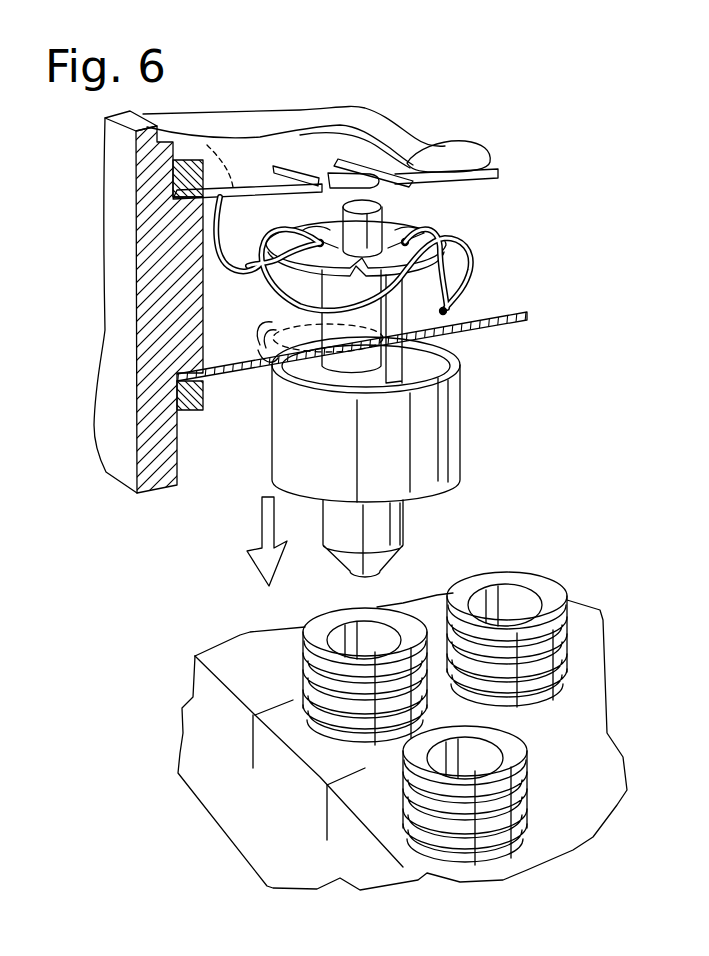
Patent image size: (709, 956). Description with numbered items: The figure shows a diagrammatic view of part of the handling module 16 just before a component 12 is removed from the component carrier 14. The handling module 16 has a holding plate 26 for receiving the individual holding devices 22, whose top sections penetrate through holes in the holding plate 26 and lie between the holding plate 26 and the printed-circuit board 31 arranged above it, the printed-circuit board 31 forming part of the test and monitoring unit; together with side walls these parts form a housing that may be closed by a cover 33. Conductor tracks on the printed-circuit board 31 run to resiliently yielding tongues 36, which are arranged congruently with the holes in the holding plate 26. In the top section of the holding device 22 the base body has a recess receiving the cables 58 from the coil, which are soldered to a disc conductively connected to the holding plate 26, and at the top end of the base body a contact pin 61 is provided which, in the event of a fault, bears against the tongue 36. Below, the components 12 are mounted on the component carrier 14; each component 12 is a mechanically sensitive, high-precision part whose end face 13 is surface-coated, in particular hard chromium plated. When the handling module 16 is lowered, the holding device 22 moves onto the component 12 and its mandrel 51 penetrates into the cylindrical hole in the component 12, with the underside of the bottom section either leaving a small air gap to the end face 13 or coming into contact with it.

The handling module 16 is at (95, 305).
The tongue 36 is at (357, 170).
The cover 33 is at (403, 133).
The printed-circuit board 31 is at (405, 165).
The contact pin 61 is at (387, 223).
The cables 58 is at (472, 247).
The holding plate 26 is at (490, 308).
The holding device 22 is at (433, 427).
The mandrel 51 is at (425, 523).
The component 12 is at (288, 625).
The end face 13 is at (548, 602).
The component carrier 14 is at (205, 738).